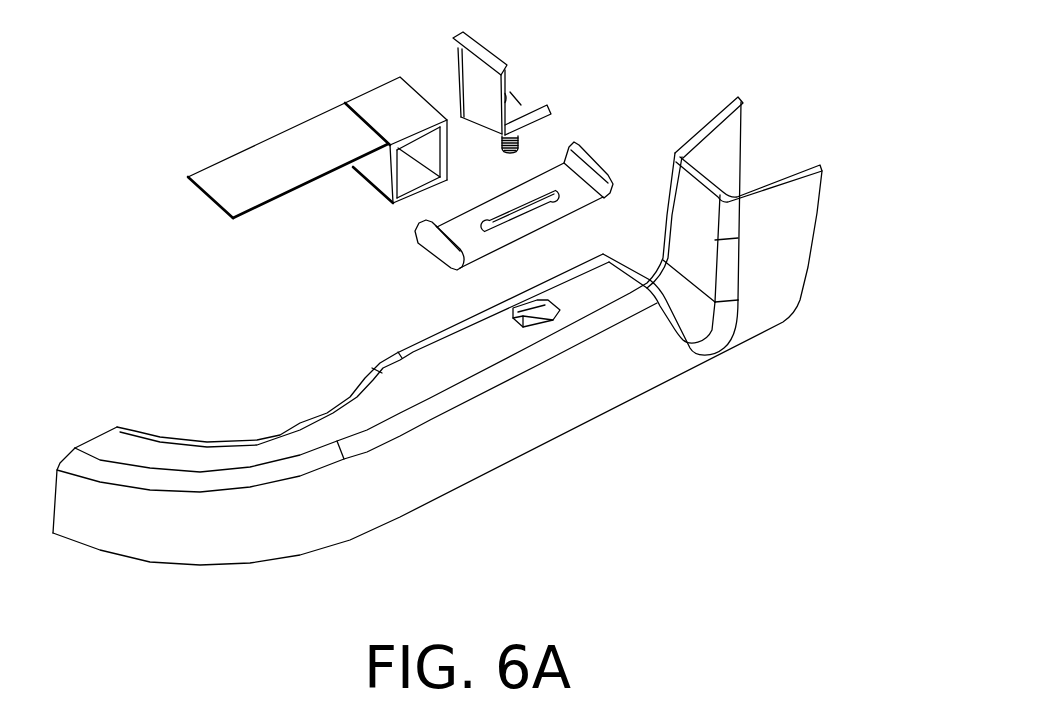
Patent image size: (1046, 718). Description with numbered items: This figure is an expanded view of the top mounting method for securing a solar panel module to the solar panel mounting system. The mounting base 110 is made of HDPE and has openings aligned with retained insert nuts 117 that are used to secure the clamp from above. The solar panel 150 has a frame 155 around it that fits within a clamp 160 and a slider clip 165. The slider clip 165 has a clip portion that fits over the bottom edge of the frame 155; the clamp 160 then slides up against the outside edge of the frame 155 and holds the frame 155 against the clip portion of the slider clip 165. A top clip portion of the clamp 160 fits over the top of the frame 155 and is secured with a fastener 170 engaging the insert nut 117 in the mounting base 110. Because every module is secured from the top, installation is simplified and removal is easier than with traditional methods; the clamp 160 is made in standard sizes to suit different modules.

The mounting base 110 is at (273, 447).
The insert nut 117 is at (547, 322).
The solar panel 150 is at (277, 158).
The frame 155 is at (382, 100).
The clamp 160 is at (477, 48).
The slider clip 165 is at (438, 241).
The fastener 170 is at (520, 92).